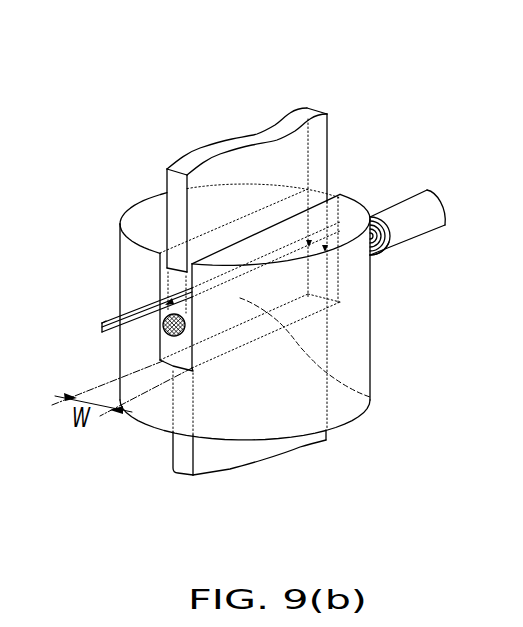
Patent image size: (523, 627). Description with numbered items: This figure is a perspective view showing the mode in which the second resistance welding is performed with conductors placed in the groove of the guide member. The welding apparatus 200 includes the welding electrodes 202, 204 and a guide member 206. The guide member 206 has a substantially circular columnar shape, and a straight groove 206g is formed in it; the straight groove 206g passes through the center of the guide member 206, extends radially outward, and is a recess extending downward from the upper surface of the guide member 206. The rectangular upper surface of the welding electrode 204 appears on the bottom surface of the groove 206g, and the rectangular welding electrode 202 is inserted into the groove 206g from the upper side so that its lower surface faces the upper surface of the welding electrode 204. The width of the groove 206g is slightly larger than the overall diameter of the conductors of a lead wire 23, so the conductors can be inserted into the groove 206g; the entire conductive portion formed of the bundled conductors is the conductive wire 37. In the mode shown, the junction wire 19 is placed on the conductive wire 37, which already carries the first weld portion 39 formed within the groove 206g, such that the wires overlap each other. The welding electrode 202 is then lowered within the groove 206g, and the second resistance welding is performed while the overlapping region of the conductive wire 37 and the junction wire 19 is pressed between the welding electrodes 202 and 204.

The welding apparatus 200 is at (381, 84).
The welding electrode 202 is at (236, 138).
The welding electrode 204 is at (228, 468).
The guide member 206 is at (372, 352).
The straight groove 206g is at (160, 352).
The junction wire 19 is at (112, 318).
The lead wire 23 is at (408, 208).
The conductive wire 37 is at (375, 258).
The first weld portion 39 is at (372, 398).